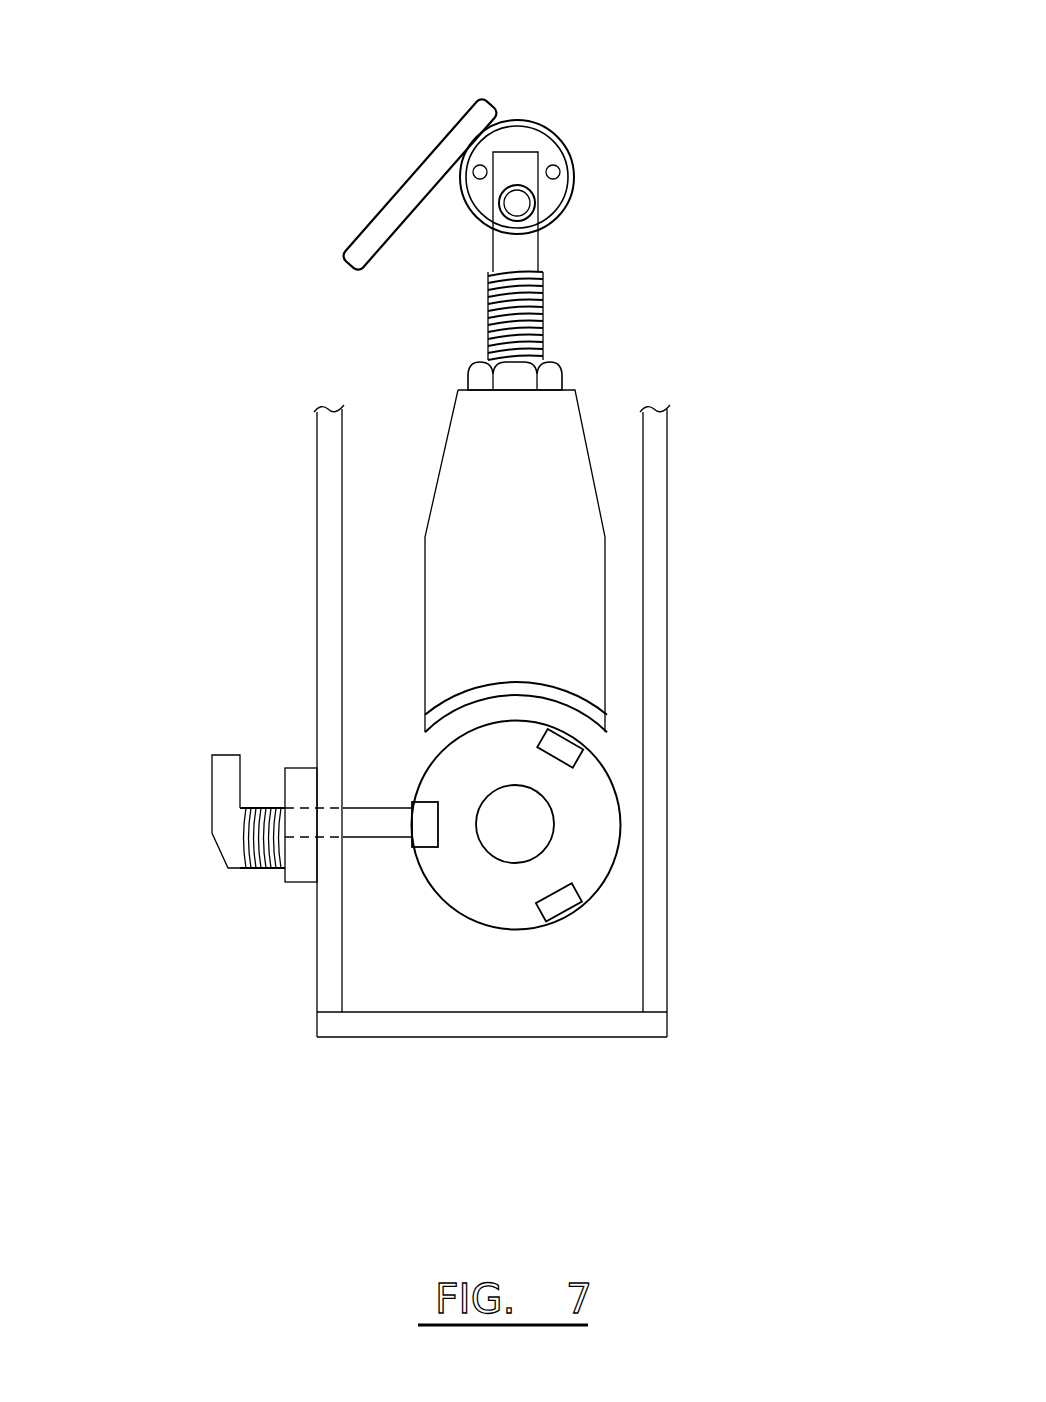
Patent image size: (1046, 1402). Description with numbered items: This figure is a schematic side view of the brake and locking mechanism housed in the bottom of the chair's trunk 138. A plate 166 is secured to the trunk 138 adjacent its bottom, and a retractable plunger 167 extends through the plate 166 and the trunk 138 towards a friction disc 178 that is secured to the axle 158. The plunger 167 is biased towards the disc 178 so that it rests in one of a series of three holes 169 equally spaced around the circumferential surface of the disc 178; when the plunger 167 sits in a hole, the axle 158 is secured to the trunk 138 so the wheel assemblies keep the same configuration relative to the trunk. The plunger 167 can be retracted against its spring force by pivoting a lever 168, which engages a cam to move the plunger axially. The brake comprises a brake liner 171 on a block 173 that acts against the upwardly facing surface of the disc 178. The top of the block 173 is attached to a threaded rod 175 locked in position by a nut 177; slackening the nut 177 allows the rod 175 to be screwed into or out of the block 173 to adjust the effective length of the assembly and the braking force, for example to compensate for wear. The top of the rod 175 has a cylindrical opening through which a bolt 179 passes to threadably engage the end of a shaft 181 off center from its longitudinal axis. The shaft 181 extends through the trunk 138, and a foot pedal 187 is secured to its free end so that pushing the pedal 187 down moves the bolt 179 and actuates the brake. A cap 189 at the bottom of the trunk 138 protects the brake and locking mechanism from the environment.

The trunk 138 is at (328, 588).
The axle 158 is at (528, 833).
The plate 166 is at (302, 875).
The retractable plunger 167 is at (373, 818).
The lever 168 is at (220, 787).
The holes 169 is at (560, 750).
The brake liner 171 is at (572, 698).
The block 173 is at (553, 555).
The threaded rod 175 is at (530, 310).
The nut 177 is at (553, 373).
The friction disc 178 is at (595, 817).
The bolt 179 is at (517, 203).
The shaft 181 is at (530, 138).
The foot pedal 187 is at (420, 177).
The cap 189 is at (578, 1028).